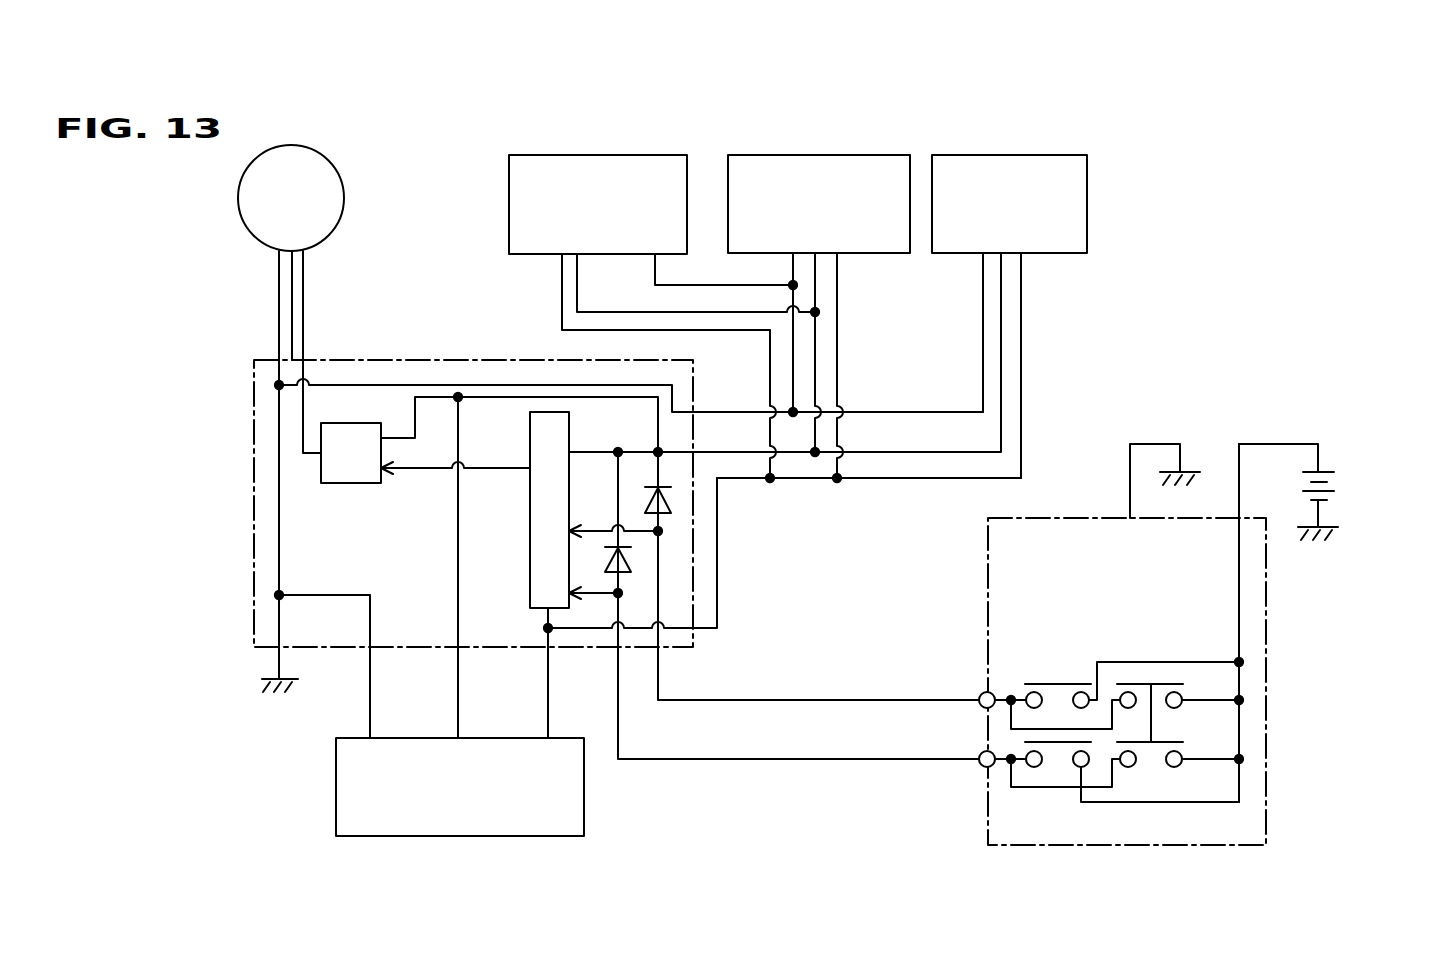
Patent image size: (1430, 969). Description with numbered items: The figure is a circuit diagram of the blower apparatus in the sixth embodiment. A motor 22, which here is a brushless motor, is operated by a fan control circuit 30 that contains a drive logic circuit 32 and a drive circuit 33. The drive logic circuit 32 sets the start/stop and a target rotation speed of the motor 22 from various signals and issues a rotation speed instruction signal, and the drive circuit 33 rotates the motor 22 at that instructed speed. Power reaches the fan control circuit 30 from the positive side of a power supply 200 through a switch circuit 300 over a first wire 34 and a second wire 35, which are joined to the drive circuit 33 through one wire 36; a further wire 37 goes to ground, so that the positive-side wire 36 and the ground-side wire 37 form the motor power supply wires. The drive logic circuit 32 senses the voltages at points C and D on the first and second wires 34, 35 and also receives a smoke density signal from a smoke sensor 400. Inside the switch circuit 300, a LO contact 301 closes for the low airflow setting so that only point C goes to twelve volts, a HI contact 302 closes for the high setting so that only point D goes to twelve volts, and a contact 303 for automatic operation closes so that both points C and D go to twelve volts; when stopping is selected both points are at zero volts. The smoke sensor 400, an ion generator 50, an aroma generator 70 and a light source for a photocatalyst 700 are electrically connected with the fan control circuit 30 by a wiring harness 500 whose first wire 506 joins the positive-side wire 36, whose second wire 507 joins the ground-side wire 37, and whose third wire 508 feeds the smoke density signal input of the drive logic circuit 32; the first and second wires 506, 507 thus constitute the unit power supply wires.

The motor 22 is at (240, 203).
The fan control circuit 30 is at (250, 420).
The drive logic circuit 32 is at (543, 412).
The drive circuit 33 is at (352, 423).
The first wire 34 is at (660, 560).
The second wire 35 is at (621, 583).
The wire 36 is at (694, 392).
The wire 37 is at (280, 513).
The ion generator 50 is at (852, 155).
The aroma generator 70 is at (1055, 155).
The power supply 200 is at (1338, 488).
The switch circuit 300 is at (985, 587).
The LO contact 301 is at (1047, 684).
The HI contact 302 is at (1060, 745).
The contact for automatic operation 303 is at (1153, 729).
The smoke sensor 400 is at (498, 838).
The wiring harness 500 is at (911, 494).
The first wire 506 is at (458, 717).
The second wire 507 is at (370, 717).
The third wire 508 is at (548, 717).
The light source for a photocatalyst 700 is at (633, 155).
The point C is at (662, 530).
The point D is at (627, 592).